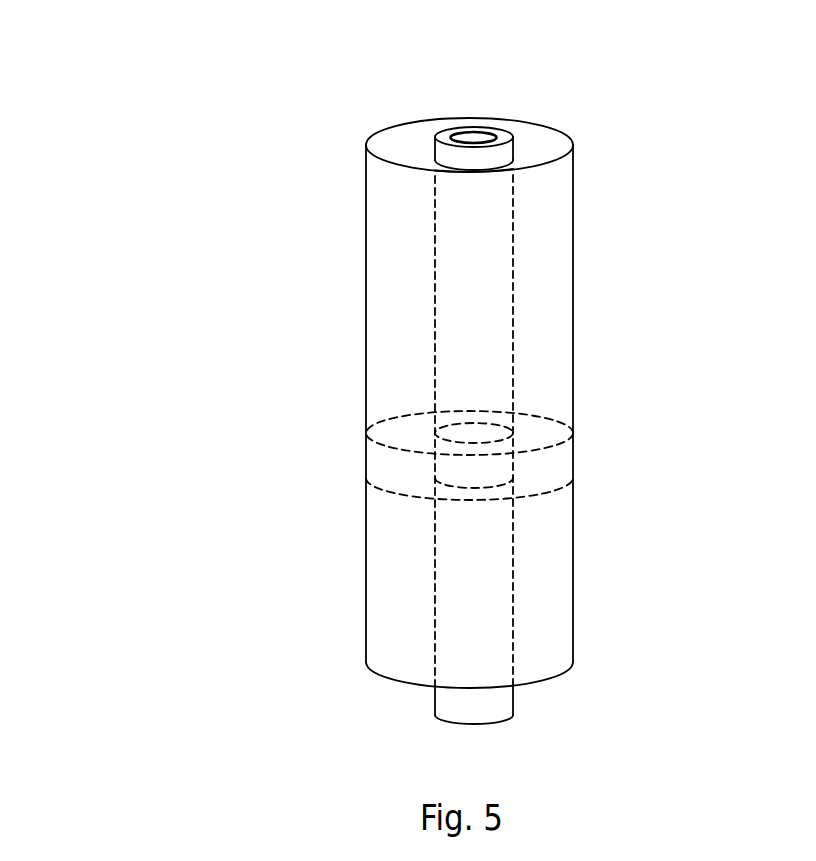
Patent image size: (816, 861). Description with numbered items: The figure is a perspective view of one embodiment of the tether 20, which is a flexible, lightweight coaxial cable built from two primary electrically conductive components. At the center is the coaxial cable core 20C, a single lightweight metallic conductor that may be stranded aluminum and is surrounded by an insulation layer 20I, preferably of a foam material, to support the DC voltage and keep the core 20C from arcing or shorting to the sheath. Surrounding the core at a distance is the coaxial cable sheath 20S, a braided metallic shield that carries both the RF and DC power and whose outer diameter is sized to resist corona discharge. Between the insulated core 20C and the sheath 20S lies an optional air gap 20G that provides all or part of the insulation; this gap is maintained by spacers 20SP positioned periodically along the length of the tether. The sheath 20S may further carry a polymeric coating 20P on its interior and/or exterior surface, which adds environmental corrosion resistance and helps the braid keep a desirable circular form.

The tether 20 is at (359, 366).
The polymeric coating 20P is at (557, 560).
The coaxial cable sheath 20S is at (574, 142).
The air gap 20G is at (532, 148).
The insulation layer 20I is at (430, 158).
The coaxial cable core 20C is at (475, 137).
The spacer 20SP is at (310, 436).